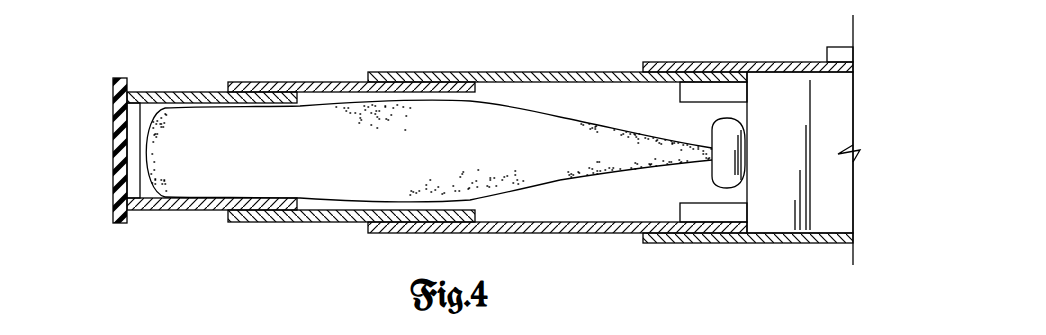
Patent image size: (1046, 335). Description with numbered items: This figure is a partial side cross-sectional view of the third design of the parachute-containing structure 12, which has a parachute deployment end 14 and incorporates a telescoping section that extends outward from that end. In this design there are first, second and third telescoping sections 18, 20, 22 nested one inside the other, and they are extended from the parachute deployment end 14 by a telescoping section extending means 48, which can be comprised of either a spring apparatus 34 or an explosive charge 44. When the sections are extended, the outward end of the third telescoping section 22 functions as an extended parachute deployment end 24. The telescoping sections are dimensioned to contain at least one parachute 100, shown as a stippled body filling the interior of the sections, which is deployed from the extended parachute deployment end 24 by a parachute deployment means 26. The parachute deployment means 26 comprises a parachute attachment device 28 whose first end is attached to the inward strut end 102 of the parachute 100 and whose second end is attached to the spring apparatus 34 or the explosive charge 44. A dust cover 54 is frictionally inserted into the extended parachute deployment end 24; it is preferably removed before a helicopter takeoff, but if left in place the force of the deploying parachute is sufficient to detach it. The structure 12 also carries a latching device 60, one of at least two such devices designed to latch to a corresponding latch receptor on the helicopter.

The parachute-containing structure 12 is at (667, 63).
The parachute deployment end 14 is at (640, 72).
The first telescoping section 18 is at (445, 78).
The second telescoping section 20 is at (287, 87).
The third telescoping section 22 is at (146, 97).
The extended parachute deployment end 24 is at (152, 188).
The parachute deployment means 26 is at (750, 198).
The parachute attachment device 28 is at (723, 172).
The spring apparatus 34 is at (785, 178).
The explosive charge 44 is at (835, 260).
The telescoping section extending means 48 is at (700, 92).
The dust cover 54 is at (113, 117).
The latching device 60 is at (833, 53).
The parachute 100 is at (322, 132).
The strut end 102 is at (703, 155).